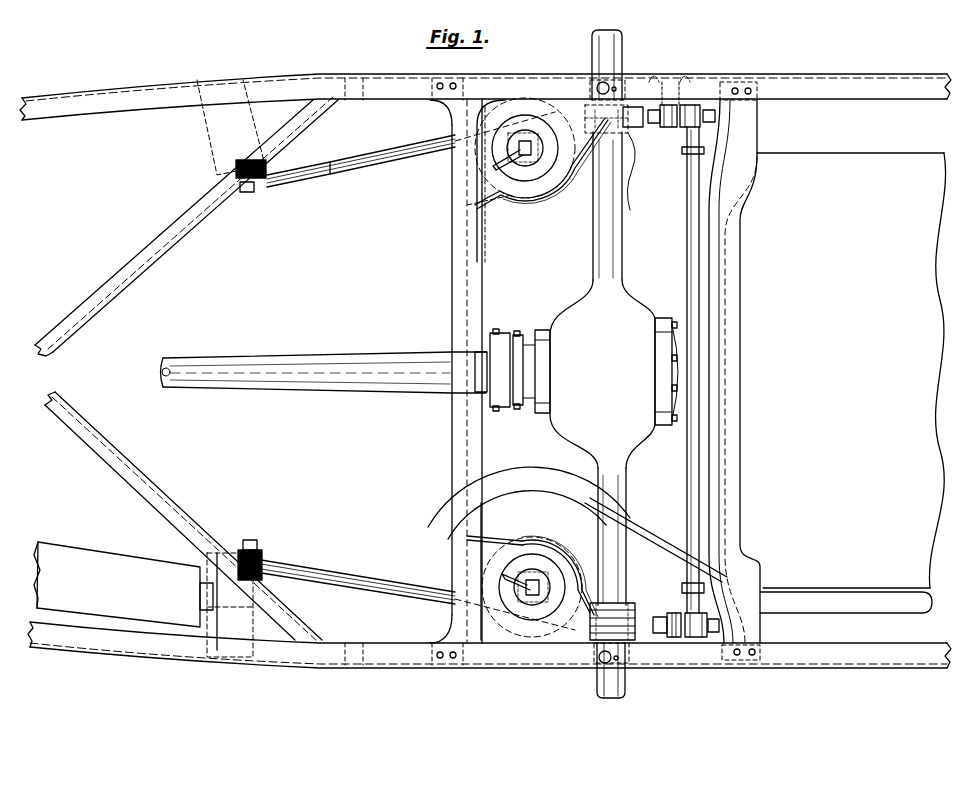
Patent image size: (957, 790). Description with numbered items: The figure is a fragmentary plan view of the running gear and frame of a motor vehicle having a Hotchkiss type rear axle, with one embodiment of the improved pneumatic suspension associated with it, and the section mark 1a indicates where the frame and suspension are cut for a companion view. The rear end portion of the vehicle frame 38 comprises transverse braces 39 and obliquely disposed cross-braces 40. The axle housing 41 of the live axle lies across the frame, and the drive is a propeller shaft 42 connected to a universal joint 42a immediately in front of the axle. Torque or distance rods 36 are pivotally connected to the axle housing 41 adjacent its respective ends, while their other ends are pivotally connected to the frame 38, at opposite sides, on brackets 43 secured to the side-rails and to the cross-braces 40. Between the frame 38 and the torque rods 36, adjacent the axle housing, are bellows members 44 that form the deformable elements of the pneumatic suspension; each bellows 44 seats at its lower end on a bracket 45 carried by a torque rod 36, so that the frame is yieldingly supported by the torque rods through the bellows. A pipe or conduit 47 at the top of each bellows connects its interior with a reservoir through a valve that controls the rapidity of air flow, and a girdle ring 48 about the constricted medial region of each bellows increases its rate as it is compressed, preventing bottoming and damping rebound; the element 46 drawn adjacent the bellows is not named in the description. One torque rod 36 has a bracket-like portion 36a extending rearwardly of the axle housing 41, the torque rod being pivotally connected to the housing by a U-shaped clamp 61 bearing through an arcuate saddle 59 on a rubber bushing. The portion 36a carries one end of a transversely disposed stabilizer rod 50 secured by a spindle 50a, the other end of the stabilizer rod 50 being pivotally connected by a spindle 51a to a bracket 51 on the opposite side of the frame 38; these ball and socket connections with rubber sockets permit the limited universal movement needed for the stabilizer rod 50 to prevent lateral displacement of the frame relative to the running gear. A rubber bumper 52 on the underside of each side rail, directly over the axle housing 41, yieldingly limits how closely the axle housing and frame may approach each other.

The vehicle frame 38 is at (131, 88).
The transverse braces 39 is at (451, 273).
The cross-braces 40 is at (148, 258).
The axle housing 41 is at (594, 278).
The propeller shaft 42 is at (255, 356).
The universal joint 42a is at (515, 405).
The brackets 43 is at (210, 140).
The bellows members 44 is at (492, 205).
The bracket 45 is at (560, 182).
The brake backing plate 46 is at (478, 225).
The pipe or conduit 47 is at (514, 178).
The girdle ring 48 is at (540, 192).
The stabilizer rod 50 is at (686, 238).
The spindle 50a is at (714, 630).
The bracket 51 is at (642, 126).
The spindle 51a is at (714, 100).
The rubber bumper 52 is at (600, 63).
The saddle 59 is at (620, 193).
The U-shaped clamp 61 is at (634, 130).
The torque rods 36 is at (374, 168).
The bracket-like portion 36a is at (665, 598).
The section line indicator 1a is at (200, 196).